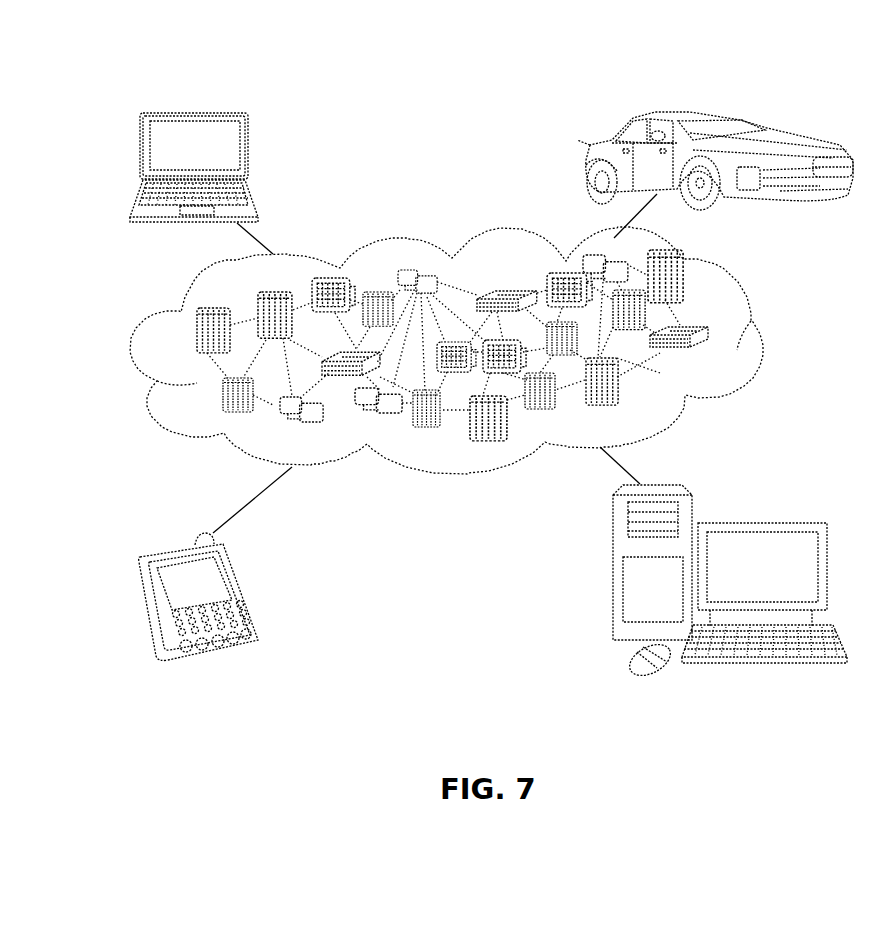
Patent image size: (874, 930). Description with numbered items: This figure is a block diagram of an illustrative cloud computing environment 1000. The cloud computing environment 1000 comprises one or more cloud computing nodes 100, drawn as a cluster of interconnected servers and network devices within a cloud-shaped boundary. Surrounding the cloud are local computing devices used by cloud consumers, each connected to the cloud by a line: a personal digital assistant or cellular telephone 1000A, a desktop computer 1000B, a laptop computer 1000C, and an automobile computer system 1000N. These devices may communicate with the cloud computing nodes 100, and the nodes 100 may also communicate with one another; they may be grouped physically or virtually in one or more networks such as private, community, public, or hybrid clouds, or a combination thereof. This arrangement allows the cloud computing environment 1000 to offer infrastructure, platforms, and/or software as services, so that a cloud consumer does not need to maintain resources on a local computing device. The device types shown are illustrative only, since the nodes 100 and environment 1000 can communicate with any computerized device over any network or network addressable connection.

The cloud computing environment 1000 is at (82, 52).
The cloud computing nodes 100 is at (712, 350).
The personal digital assistant or cellular telephone 1000A is at (242, 588).
The desktop computer 1000B is at (770, 510).
The laptop computer 1000C is at (253, 154).
The automobile computer system 1000N is at (583, 164).